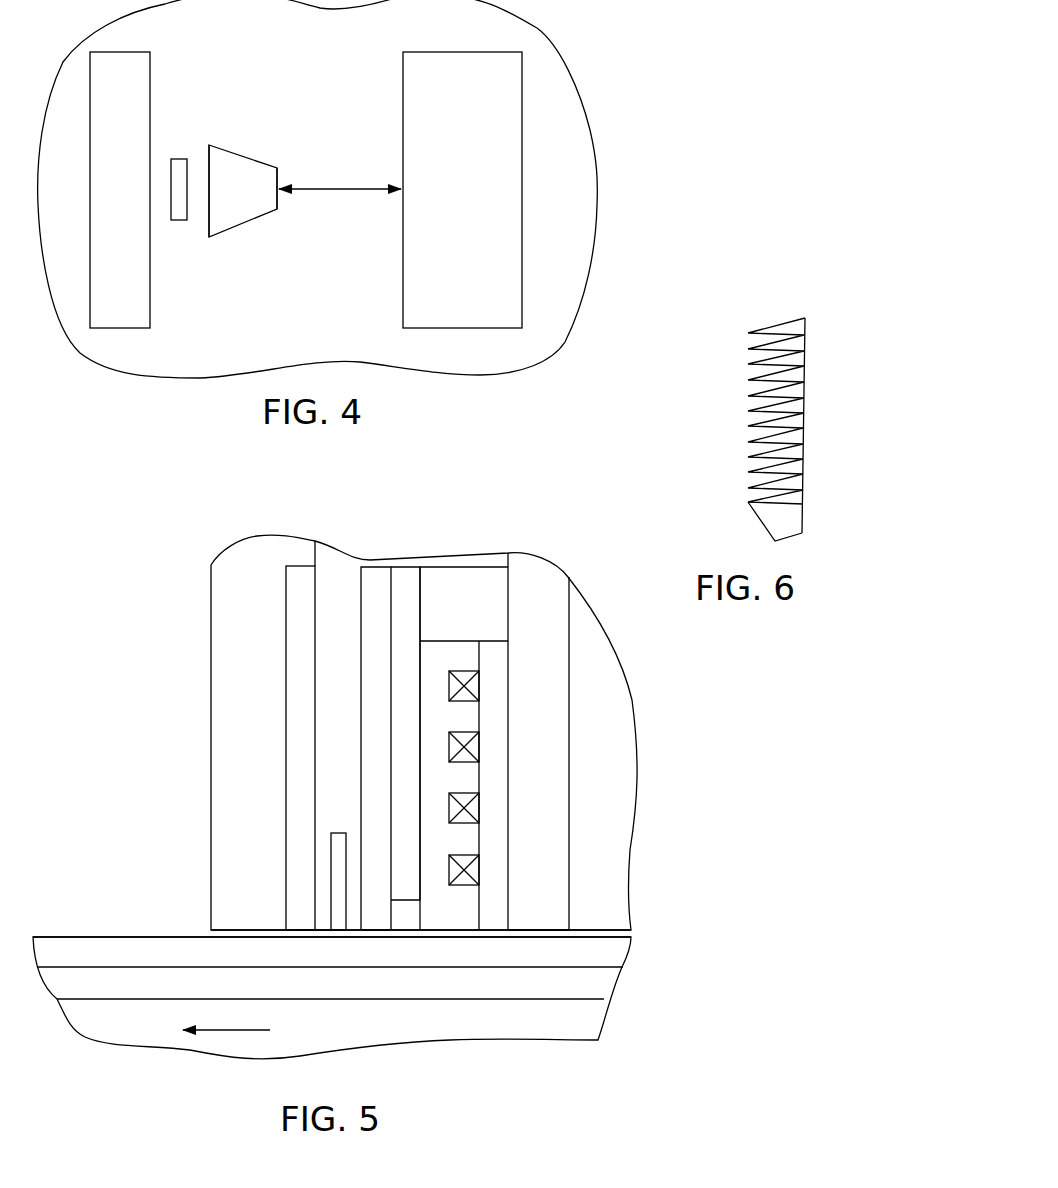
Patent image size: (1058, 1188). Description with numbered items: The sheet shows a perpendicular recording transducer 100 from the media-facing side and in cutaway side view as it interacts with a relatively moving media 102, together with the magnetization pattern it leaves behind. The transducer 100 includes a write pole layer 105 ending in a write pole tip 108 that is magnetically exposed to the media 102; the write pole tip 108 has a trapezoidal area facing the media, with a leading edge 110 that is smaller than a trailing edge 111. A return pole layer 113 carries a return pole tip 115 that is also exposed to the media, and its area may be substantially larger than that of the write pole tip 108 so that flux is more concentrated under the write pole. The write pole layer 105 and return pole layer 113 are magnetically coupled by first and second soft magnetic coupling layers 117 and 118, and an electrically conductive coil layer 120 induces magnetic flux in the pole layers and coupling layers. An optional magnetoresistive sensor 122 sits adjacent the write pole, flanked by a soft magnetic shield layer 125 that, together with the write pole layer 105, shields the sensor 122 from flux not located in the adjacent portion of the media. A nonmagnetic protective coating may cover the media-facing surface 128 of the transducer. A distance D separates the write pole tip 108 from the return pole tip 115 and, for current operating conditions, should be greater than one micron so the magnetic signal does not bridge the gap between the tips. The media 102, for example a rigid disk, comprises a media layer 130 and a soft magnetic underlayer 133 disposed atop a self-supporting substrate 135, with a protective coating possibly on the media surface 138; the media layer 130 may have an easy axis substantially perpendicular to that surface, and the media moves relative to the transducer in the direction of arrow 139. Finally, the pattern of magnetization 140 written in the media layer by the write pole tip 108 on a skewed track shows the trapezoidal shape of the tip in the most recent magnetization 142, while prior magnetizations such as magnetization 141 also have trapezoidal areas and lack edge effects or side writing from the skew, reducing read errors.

In FIG. 4, the transducer 100 is at (657, 51).
In FIG. 5, the transducer 100 is at (180, 788).
In FIG. 5, the media 102 is at (661, 983).
In FIG. 5, the write pole layer 105 is at (361, 787).
In FIG. 4, the write pole tip 108 is at (263, 203).
In FIG. 5, the write pole tip 108 is at (376, 937).
In FIG. 4, the leading edge 110 is at (281, 209).
In FIG. 4, the trailing edge 111 is at (206, 159).
In FIG. 5, the return pole layer 113 is at (556, 766).
In FIG. 4, the return pole tip 115 is at (481, 203).
In FIG. 5, the return pole tip 115 is at (542, 931).
In FIG. 5, the first soft magnetic coupling layer 117 is at (480, 614).
In FIG. 5, the second soft magnetic coupling layer 118 is at (404, 580).
In FIG. 5, the coil layer 120 is at (479, 868).
In FIG. 4, the magnetoresistive sensor 122 is at (180, 222).
In FIG. 5, the magnetoresistive sensor 122 is at (331, 879).
In FIG. 4, the soft magnetic shield layer 125 is at (137, 203).
In FIG. 5, the soft magnetic shield layer 125 is at (286, 727).
In FIG. 5, the media-facing surface 128 is at (316, 935).
In FIG. 5, the media layer 130 is at (199, 965).
In FIG. 5, the underlayer 133 is at (139, 995).
In FIG. 5, the substrate 135 is at (466, 1042).
In FIG. 5, the media surface 138 is at (137, 935).
In FIG. 5, the arrow 139 is at (228, 1032).
In FIG. 6, the pattern of magnetization 140 is at (723, 429).
In FIG. 6, the prior magnetization 141 is at (748, 502).
In FIG. 6, the most recent magnetization 142 is at (765, 528).
In FIG. 4, the distance D is at (340, 180).